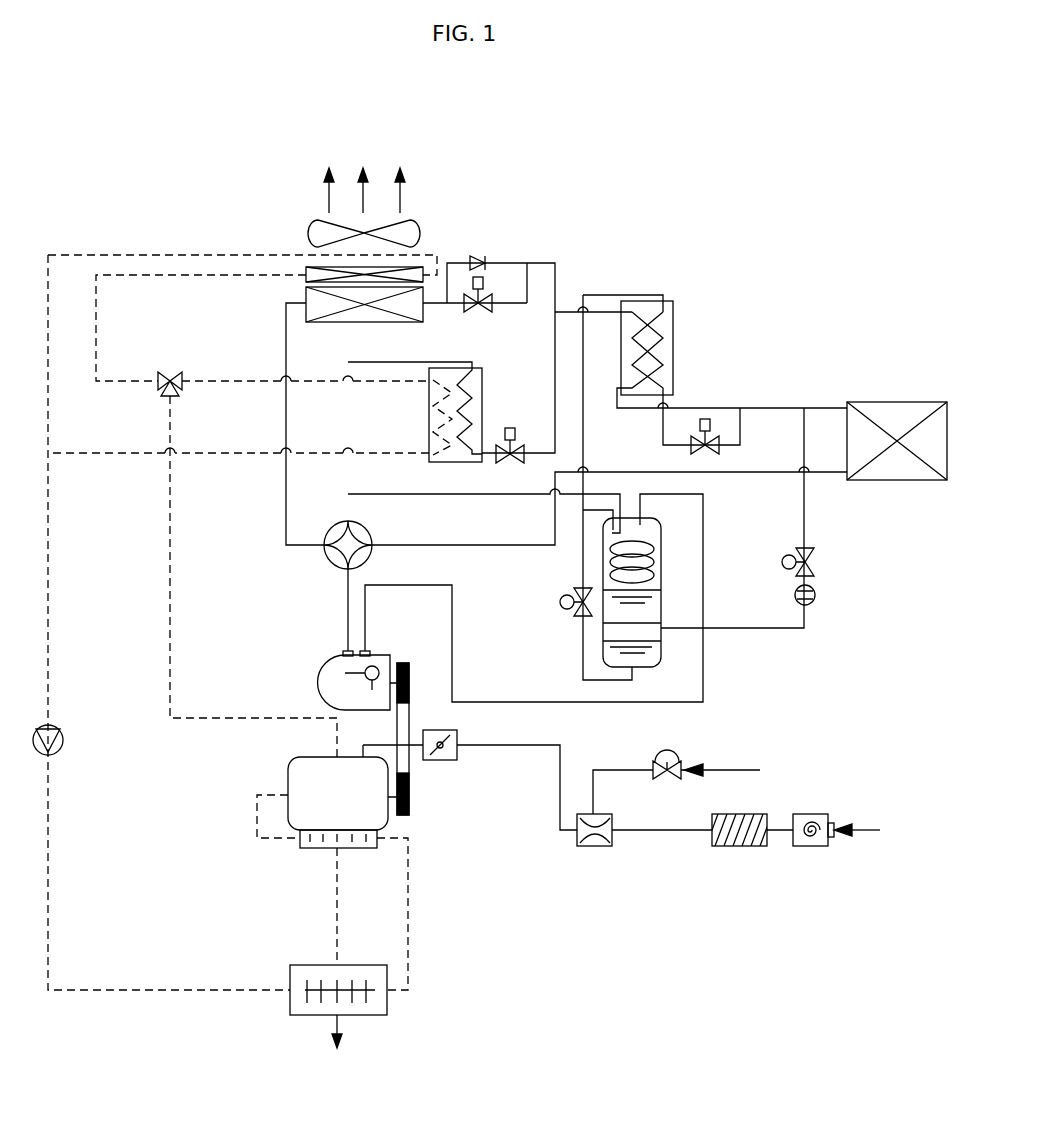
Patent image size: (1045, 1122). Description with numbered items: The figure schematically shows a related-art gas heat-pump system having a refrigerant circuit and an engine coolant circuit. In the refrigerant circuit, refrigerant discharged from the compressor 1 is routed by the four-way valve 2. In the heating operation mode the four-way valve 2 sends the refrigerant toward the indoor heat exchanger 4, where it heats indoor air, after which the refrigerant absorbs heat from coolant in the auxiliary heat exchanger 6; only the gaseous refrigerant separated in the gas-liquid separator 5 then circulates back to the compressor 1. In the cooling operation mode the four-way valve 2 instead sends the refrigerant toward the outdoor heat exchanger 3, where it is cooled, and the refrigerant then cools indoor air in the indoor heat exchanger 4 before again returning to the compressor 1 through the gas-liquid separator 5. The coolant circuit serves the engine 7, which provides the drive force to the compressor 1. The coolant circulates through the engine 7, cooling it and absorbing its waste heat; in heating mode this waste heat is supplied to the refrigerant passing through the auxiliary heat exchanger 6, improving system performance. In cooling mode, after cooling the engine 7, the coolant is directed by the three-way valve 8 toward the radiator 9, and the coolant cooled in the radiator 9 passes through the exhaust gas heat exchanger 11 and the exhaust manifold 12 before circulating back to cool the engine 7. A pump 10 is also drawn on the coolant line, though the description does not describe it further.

The compressor 1 is at (388, 659).
The four-way valve 2 is at (372, 531).
The outdoor heat exchanger 3 is at (306, 293).
The indoor heat exchanger 4 is at (895, 402).
The gas-liquid separator 5 is at (662, 577).
The auxiliary heat exchanger 6 is at (429, 412).
The engine 7 is at (293, 765).
The three-way valve 8 is at (170, 374).
The radiator 9 is at (306, 272).
The coolant pump 10 is at (58, 752).
The exhaust gas heat exchanger 11 is at (388, 1002).
The exhaust manifold 12 is at (367, 850).